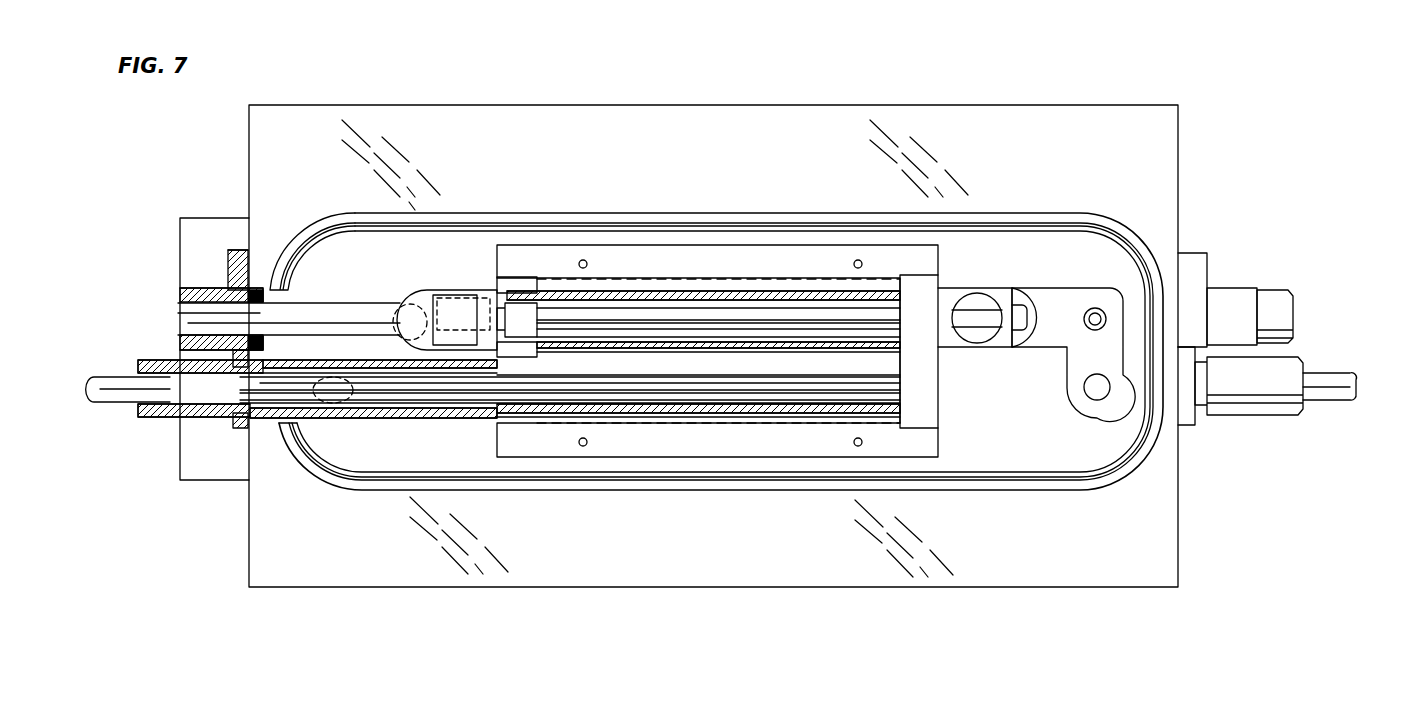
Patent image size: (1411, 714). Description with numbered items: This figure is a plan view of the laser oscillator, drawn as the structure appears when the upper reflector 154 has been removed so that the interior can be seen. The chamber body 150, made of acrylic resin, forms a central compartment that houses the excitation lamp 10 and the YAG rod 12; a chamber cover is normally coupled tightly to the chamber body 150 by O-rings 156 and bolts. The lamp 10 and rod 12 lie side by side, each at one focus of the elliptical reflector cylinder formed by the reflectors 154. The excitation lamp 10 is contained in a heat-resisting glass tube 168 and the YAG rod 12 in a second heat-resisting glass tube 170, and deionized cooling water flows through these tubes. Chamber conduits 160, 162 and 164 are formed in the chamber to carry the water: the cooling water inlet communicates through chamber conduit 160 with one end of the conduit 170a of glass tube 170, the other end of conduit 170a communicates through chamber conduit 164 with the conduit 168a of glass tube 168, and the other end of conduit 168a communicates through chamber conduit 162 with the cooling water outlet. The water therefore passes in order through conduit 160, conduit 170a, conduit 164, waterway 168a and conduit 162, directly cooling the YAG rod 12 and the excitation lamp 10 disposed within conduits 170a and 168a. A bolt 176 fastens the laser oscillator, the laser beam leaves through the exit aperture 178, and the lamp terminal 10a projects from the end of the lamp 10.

The excitation lamp 10 is at (440, 384).
The lamp terminal 10a is at (113, 380).
The YAG rod 12 is at (620, 310).
The chamber body 150 is at (1037, 120).
The upper reflector 154 is at (697, 256).
The O-ring 156 is at (1060, 212).
The chamber conduit 160 is at (310, 392).
The chamber conduit 162 is at (480, 300).
The chamber conduit 164 is at (1066, 305).
The heat-resisting glass tube 168 is at (628, 408).
The glass tube conduit 168a is at (580, 395).
The heat-resisting glass tube 170 is at (820, 290).
The glass tube conduit 170a is at (768, 306).
The bolt 176 is at (975, 305).
The laser beam exit aperture 178 is at (178, 315).